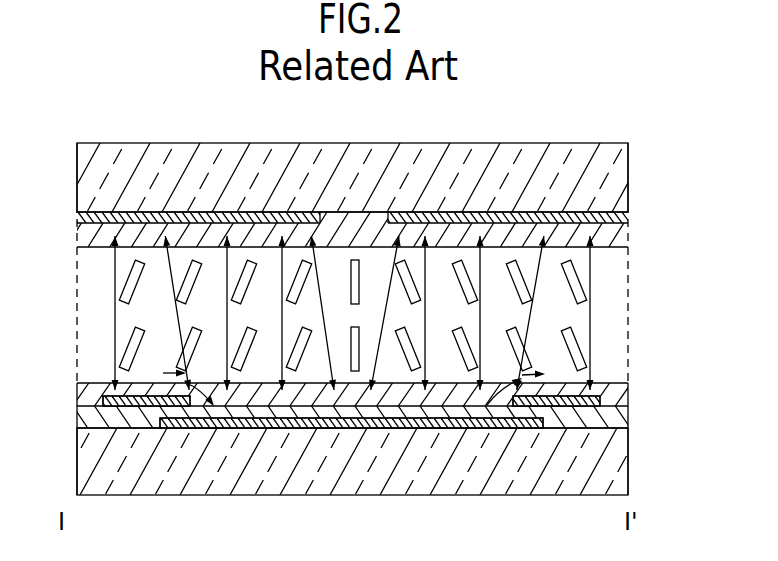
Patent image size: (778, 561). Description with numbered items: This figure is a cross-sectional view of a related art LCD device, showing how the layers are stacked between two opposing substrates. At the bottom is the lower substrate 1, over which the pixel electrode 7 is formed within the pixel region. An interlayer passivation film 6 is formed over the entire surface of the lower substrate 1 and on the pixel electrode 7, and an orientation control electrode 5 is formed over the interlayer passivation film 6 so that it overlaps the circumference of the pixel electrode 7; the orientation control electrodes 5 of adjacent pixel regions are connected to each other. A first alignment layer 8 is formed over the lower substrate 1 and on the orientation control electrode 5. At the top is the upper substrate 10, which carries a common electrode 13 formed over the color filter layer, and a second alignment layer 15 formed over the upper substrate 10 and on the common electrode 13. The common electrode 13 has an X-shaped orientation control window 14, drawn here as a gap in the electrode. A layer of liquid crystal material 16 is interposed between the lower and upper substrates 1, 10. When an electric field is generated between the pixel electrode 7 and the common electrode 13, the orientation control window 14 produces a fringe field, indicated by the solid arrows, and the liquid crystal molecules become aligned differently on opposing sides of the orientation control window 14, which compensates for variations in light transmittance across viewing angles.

The lower substrate 1 is at (628, 465).
The orientation control electrode 5 is at (600, 402).
The interlayer passivation film 6 is at (628, 421).
The pixel electrode 7 is at (487, 428).
The first alignment layer 8 is at (77, 395).
The upper substrate 10 is at (628, 183).
The common electrode 13 is at (628, 217).
The orientation control window 14 is at (358, 228).
The second alignment layer 15 is at (628, 246).
The layer of liquid crystal material 16 is at (628, 318).